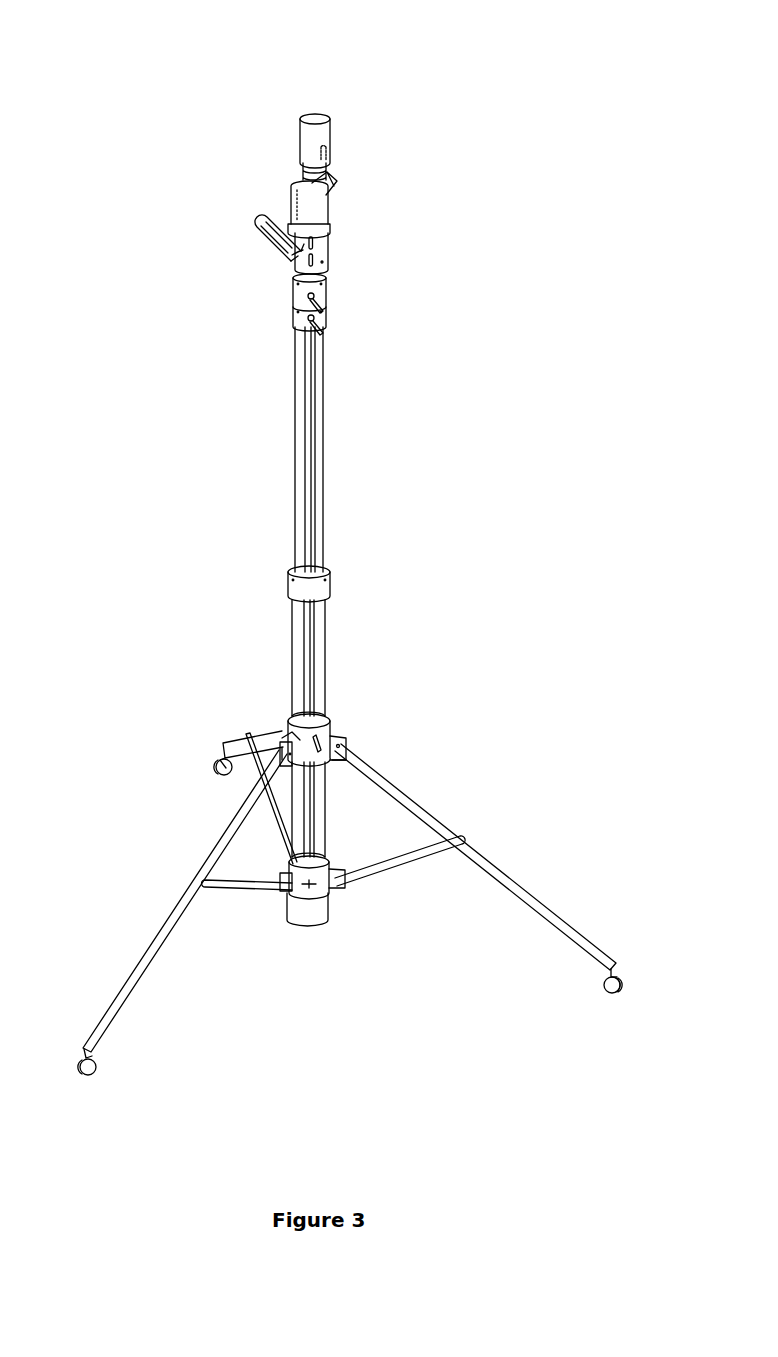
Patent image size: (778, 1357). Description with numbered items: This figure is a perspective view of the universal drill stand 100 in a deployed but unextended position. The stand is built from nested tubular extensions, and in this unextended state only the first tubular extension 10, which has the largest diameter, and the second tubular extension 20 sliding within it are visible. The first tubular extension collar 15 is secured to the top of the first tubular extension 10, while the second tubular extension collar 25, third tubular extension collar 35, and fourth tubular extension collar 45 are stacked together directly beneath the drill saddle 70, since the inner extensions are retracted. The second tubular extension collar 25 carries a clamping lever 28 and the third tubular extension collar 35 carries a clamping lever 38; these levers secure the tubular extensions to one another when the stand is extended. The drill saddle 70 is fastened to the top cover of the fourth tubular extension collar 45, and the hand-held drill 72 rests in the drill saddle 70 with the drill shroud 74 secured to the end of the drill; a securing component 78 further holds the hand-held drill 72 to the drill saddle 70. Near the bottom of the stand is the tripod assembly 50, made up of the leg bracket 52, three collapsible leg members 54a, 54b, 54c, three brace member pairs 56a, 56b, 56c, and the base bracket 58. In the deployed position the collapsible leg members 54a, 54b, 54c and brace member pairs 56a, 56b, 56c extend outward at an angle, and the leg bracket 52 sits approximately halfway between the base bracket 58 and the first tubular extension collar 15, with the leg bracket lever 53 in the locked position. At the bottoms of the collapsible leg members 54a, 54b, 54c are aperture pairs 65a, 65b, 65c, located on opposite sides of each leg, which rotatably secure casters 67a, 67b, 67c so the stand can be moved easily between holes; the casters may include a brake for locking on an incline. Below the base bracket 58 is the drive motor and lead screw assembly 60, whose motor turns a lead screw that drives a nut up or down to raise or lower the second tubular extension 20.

The universal drill stand 100 is at (313, 63).
The drill shroud 74 is at (330, 137).
The hand-held drill 72 is at (320, 212).
The securing component 78 is at (318, 224).
The drill saddle 70 is at (327, 250).
The fourth tubular extension collar 45 is at (293, 265).
The third tubular extension collar 35 is at (301, 293).
The clamping lever 38 is at (327, 290).
The second tubular extension collar 25 is at (277, 334).
The clamping lever 28 is at (328, 319).
The second tubular extension 20 is at (324, 407).
The first tubular extension collar 15 is at (288, 590).
The first tubular extension 10 is at (325, 613).
The tripod assembly 50 is at (308, 710).
The leg bracket 52 is at (293, 737).
The leg bracket lever 53 is at (323, 762).
The collapsible leg member 54a is at (152, 936).
The collapsible leg member 54b is at (172, 743).
The collapsible leg member 54c is at (510, 903).
The brace member pair 56a is at (222, 888).
The brace member pair 56b is at (263, 768).
The brace member pair 56c is at (448, 852).
The base bracket 58 is at (312, 888).
The drive motor and lead screw assembly 60 is at (356, 928).
The aperture pair 65a is at (157, 1077).
The aperture pair 65b is at (147, 771).
The aperture pair 65c is at (602, 1015).
The caster 67a is at (87, 1078).
The caster 67b is at (235, 740).
The caster 67c is at (628, 983).